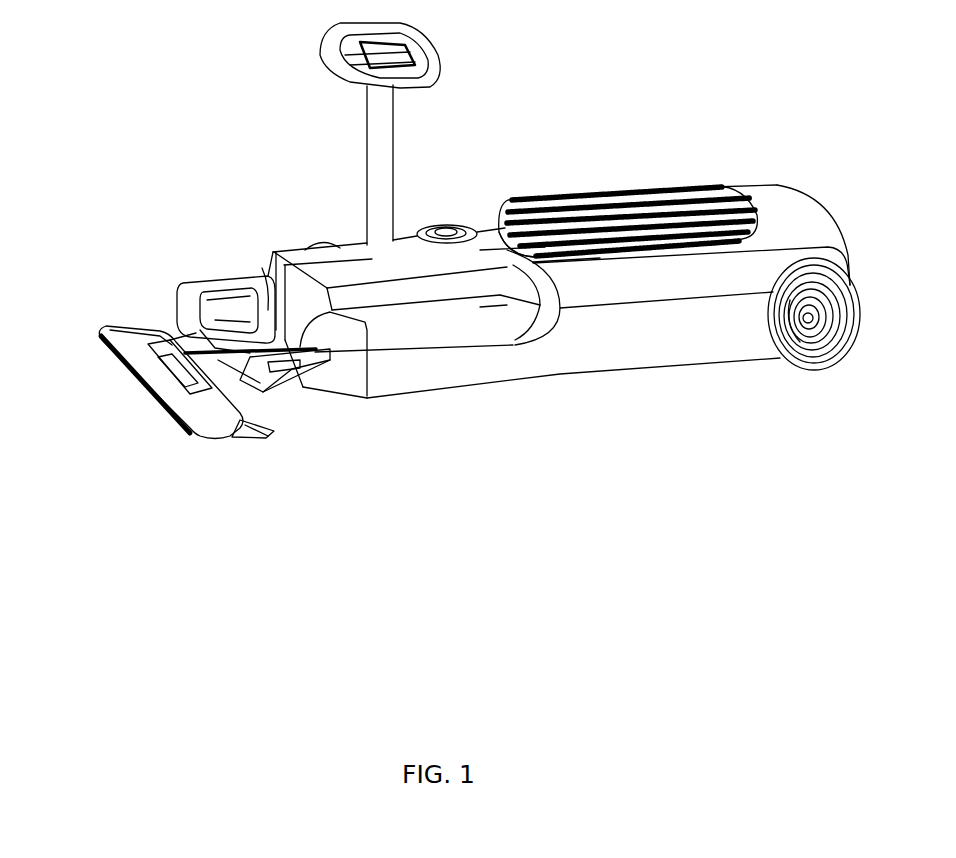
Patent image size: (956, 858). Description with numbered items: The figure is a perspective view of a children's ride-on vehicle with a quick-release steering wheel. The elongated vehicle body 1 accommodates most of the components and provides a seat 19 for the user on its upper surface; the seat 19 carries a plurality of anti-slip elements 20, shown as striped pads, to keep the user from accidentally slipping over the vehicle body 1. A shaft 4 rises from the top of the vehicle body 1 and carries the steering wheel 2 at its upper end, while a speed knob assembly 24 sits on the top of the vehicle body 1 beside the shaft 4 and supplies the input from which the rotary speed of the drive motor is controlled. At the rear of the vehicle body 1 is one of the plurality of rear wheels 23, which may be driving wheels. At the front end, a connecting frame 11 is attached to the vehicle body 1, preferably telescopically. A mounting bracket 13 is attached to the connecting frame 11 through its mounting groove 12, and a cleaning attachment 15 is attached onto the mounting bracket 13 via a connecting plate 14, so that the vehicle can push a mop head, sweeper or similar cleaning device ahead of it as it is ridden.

The vehicle body 1 is at (636, 289).
The steering wheel 2 is at (350, 77).
The shaft 4 is at (377, 142).
The connecting frame 11 is at (187, 288).
The mounting groove 12 is at (303, 363).
The mounting bracket 13 is at (132, 384).
The connecting plate 14 is at (183, 428).
The cleaning attachment 15 is at (264, 432).
The seat 19 is at (617, 207).
The anti-slip elements 20 is at (582, 232).
The rear wheels 23 is at (811, 358).
The speed knob assembly 24 is at (446, 223).